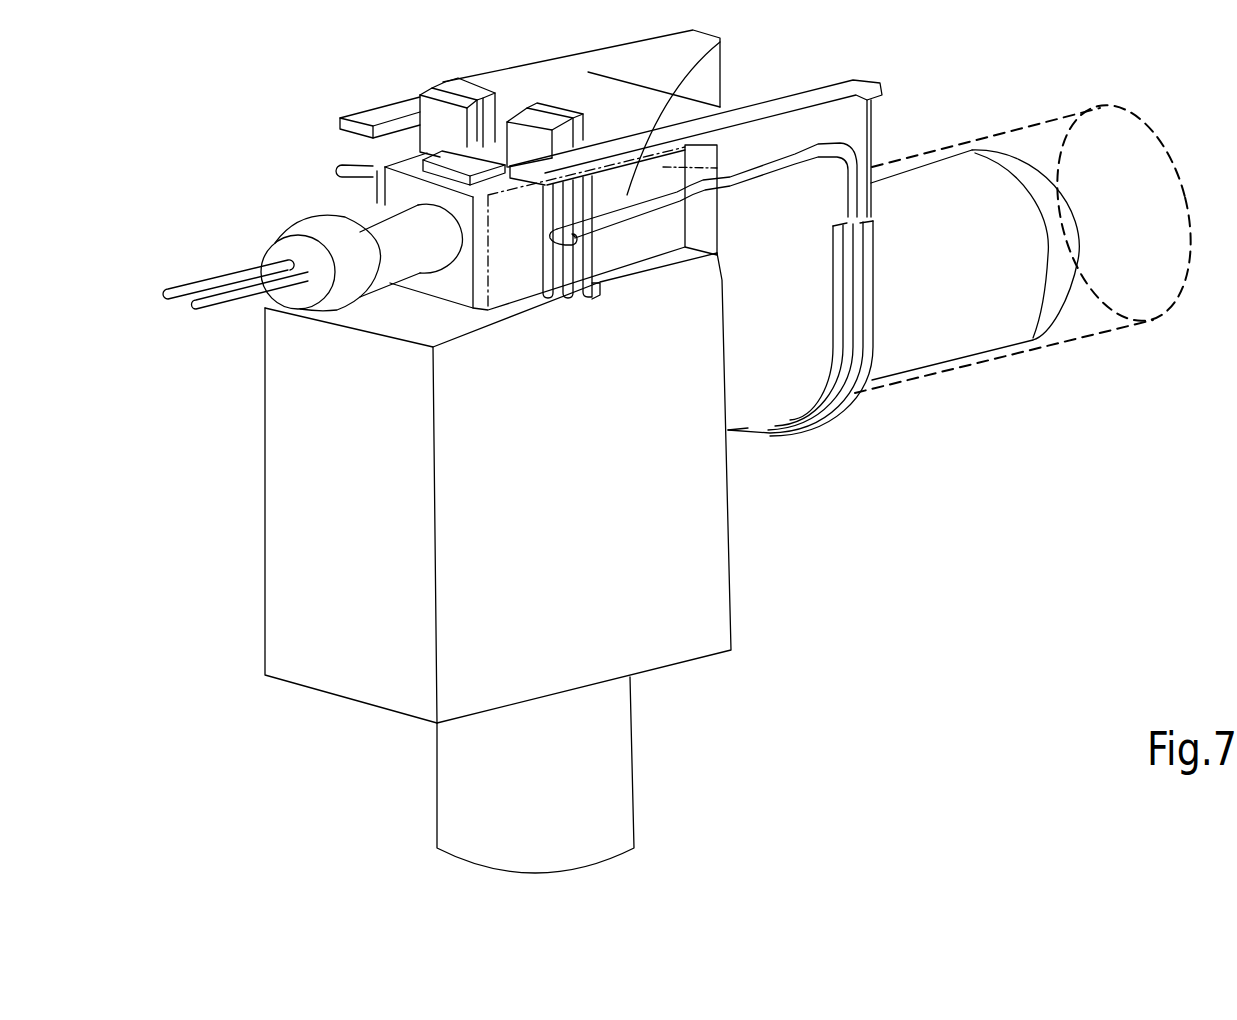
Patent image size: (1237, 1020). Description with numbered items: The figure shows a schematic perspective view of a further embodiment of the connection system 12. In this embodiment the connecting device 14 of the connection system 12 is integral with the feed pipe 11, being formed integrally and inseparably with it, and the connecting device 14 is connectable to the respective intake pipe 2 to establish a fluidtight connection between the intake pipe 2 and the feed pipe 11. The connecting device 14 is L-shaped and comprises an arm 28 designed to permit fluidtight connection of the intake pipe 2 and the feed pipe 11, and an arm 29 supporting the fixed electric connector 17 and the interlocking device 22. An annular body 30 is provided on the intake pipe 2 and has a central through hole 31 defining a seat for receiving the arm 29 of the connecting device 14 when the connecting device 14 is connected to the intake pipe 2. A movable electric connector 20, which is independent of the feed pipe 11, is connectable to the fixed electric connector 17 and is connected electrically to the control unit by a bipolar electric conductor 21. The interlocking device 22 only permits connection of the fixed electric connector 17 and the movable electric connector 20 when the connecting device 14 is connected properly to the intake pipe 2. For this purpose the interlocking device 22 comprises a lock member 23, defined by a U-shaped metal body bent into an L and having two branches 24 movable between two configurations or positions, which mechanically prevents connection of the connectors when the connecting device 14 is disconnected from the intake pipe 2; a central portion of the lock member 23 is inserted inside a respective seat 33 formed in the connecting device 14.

The intake pipe 2 is at (325, 684).
The feed pipe 11 is at (1155, 322).
The connection system 12 is at (843, 704).
The connecting device 14 is at (825, 455).
The fixed electric connector 17 is at (352, 78).
The movable electric connector 20 is at (383, 193).
The bipolar electric conductor 21 is at (222, 297).
The interlocking device 22 is at (437, 53).
The lock member 23 is at (889, 138).
The branches 24 is at (652, 118).
The arm 28 is at (748, 400).
The arm 29 is at (568, 85).
The annular body 30 is at (688, 168).
The central through hole 31 is at (722, 160).
The seat 33 is at (855, 395).